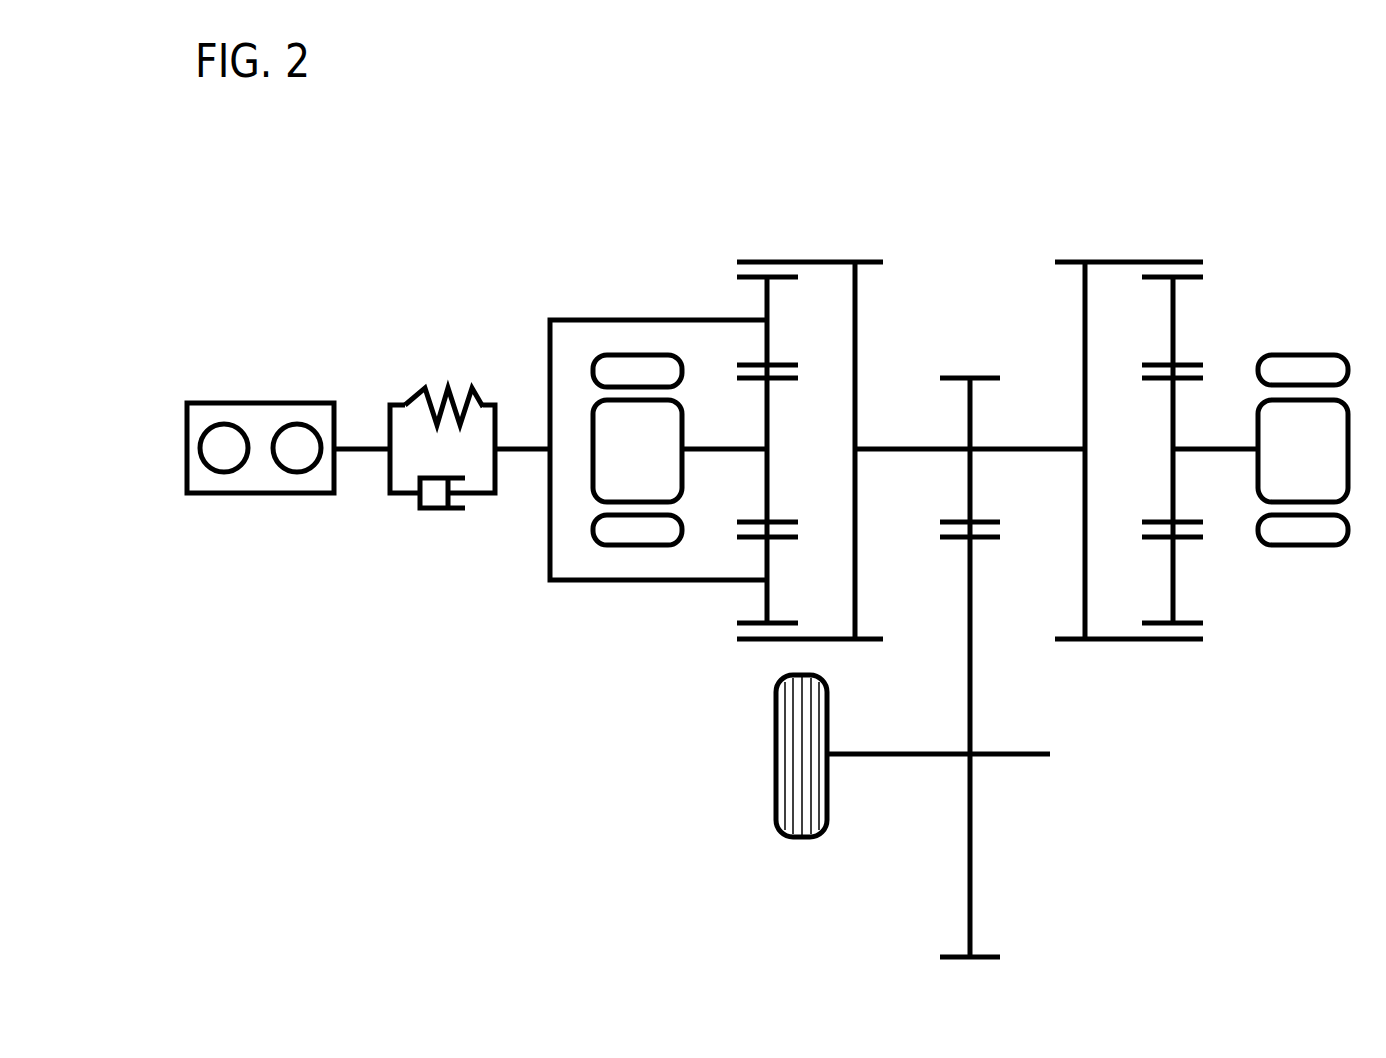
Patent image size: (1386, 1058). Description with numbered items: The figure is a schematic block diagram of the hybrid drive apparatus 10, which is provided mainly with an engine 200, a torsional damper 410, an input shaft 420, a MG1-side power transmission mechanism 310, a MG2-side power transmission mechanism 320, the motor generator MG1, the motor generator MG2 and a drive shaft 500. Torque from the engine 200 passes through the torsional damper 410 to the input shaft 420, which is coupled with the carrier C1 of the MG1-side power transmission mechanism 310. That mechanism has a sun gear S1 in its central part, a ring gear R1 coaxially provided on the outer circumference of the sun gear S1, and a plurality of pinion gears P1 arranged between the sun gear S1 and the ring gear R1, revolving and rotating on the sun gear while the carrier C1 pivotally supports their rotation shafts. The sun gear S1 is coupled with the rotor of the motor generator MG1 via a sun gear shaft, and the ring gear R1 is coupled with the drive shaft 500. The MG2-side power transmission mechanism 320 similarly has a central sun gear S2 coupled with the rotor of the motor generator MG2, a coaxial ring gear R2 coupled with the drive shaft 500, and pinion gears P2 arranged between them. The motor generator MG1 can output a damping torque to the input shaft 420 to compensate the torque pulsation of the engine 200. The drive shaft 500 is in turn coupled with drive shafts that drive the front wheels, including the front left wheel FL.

The hybrid drive apparatus 10 is at (640, 152).
The engine 200 is at (234, 403).
The torsional damper 410 is at (437, 512).
The input shaft 420 is at (520, 445).
The carrier C1 is at (680, 320).
The motor generator MG1 is at (637, 450).
The MG1-side power transmission mechanism 310 is at (812, 244).
The ring gear R1 is at (855, 328).
The sun gear S1 is at (770, 465).
The pinion gears P1 is at (770, 557).
The MG2-side power transmission mechanism 320 is at (1108, 250).
The ring gear R2 is at (1085, 330).
The sun gear S2 is at (1172, 471).
The pinion gears P2 is at (1172, 563).
The motor generator MG2 is at (1303, 450).
The drive shaft 500 is at (972, 848).
The front left wheel FL is at (795, 838).